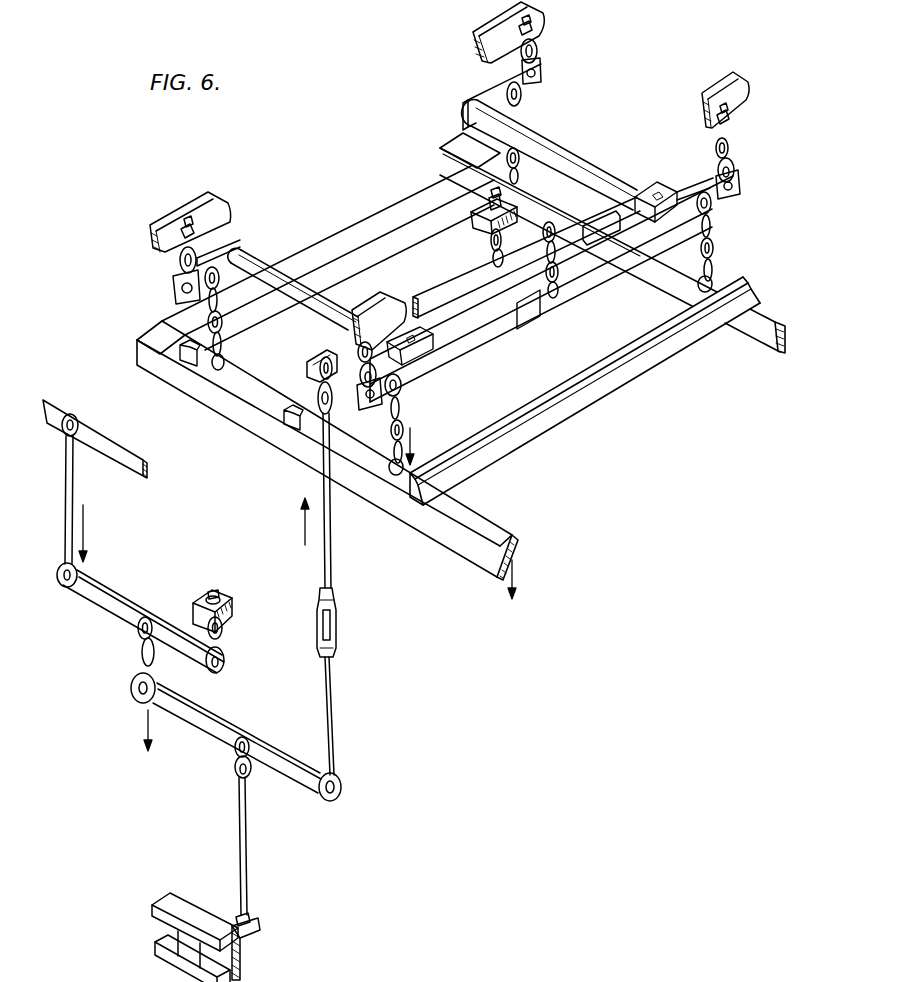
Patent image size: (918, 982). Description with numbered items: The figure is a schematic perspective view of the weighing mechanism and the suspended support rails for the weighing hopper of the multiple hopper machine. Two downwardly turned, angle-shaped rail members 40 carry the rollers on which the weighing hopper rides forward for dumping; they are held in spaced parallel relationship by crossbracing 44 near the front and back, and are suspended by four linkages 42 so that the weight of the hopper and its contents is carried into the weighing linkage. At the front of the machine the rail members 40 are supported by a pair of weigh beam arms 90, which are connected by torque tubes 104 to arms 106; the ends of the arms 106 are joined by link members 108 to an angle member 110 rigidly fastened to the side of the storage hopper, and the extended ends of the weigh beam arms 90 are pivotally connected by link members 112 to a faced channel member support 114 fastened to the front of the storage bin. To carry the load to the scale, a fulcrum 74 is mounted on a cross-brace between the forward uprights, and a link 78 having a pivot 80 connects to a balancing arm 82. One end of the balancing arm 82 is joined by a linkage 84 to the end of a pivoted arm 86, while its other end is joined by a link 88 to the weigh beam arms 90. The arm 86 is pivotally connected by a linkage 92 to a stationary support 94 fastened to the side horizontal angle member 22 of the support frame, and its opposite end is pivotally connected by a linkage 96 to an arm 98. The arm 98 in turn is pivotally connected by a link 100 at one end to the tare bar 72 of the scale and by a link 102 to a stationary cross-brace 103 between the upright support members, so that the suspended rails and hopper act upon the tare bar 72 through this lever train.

The angle member 22 is at (177, 897).
The rail member 40 is at (457, 547).
The linkage 42 is at (522, 107).
The crossbracing 44 is at (363, 242).
The tare bar 72 is at (117, 447).
The fulcrum 74 is at (471, 220).
The link 78 is at (490, 245).
The pivot 80 is at (492, 277).
The balancing arm 82 is at (450, 294).
The linkage 84 is at (324, 563).
The pivoted arm 86 is at (197, 722).
The link 88 is at (547, 253).
The weigh beam arm 90 is at (457, 350).
The linkage 92 is at (237, 840).
The stationary support 94 is at (242, 947).
The linkage 96 is at (140, 657).
The arm 98 is at (92, 600).
The link 100 is at (66, 513).
The link 102 is at (225, 642).
The stationary cross-brace 103 is at (233, 610).
The torque tube 104 is at (577, 153).
The arm 106 is at (483, 92).
The link member 108 is at (538, 58).
The angle member 110 is at (483, 24).
The link member 112 is at (730, 156).
The channel member support 114 is at (700, 87).